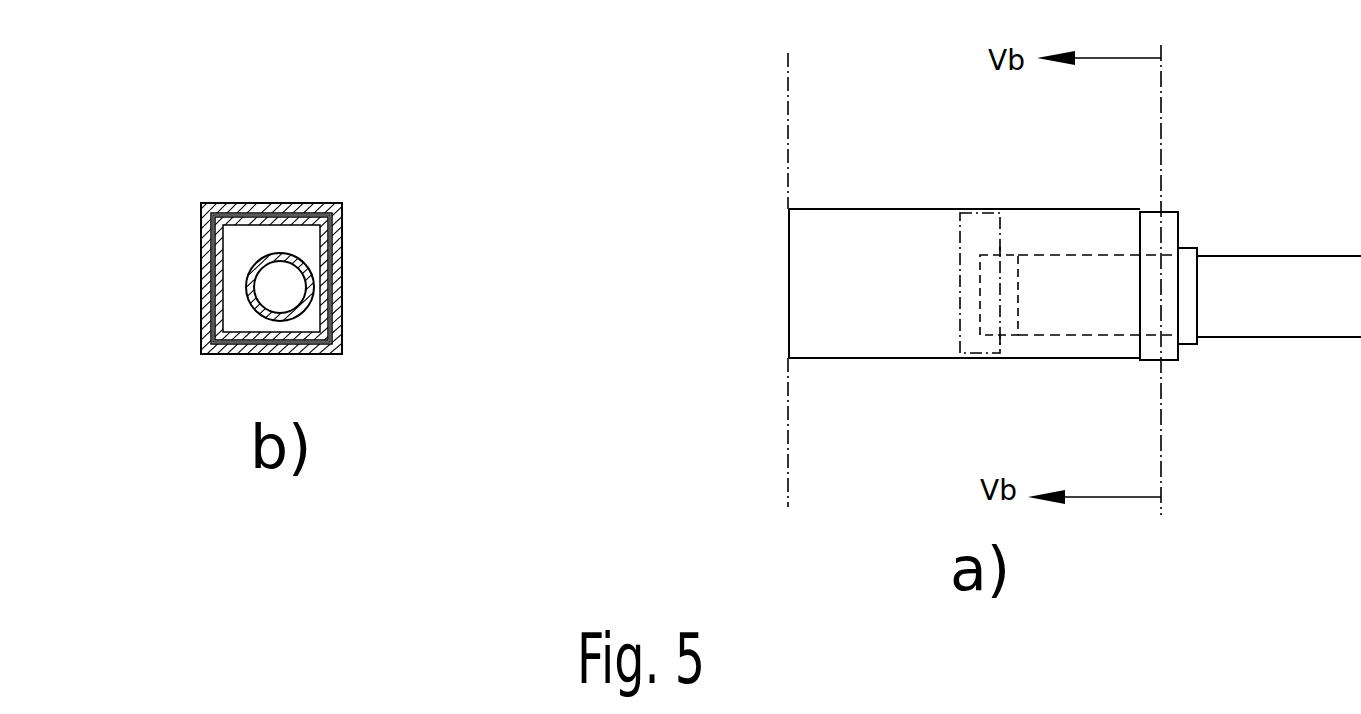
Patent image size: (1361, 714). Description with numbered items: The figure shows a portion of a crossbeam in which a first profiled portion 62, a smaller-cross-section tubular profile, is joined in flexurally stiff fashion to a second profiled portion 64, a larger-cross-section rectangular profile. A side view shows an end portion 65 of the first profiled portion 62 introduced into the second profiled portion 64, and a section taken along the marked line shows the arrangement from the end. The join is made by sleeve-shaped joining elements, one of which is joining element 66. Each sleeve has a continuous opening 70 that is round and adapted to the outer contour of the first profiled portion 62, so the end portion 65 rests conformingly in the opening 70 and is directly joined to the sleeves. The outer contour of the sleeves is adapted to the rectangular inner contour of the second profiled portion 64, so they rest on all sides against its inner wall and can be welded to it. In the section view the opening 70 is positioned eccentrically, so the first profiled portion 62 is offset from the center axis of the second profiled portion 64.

The first profiled portion 62 is at (1266, 310).
The second profiled portion 64 is at (867, 320).
The end portion 65 is at (1088, 305).
The joining element 66 is at (983, 222).
The continuous opening 70 is at (252, 312).